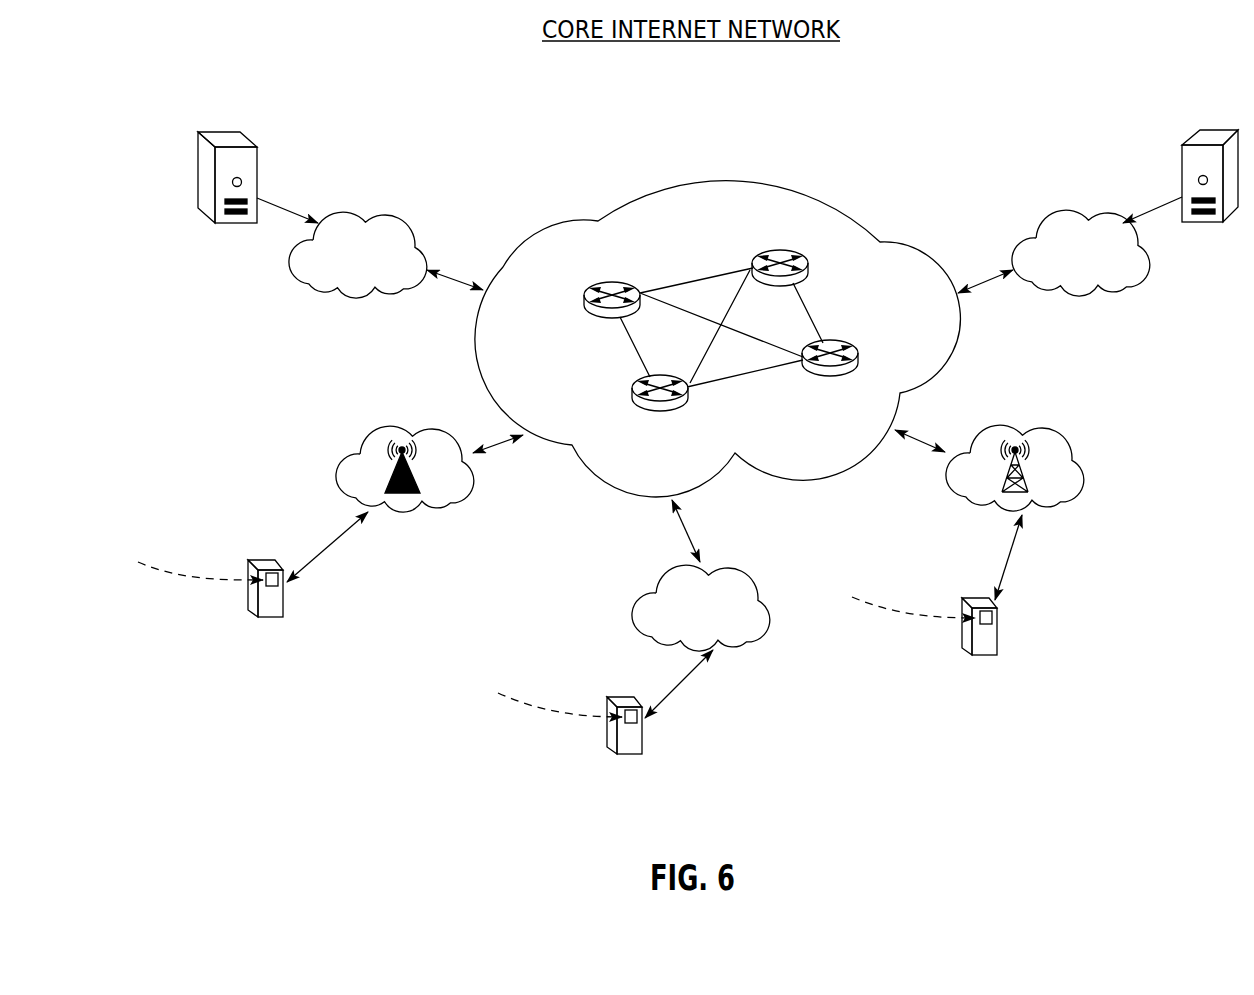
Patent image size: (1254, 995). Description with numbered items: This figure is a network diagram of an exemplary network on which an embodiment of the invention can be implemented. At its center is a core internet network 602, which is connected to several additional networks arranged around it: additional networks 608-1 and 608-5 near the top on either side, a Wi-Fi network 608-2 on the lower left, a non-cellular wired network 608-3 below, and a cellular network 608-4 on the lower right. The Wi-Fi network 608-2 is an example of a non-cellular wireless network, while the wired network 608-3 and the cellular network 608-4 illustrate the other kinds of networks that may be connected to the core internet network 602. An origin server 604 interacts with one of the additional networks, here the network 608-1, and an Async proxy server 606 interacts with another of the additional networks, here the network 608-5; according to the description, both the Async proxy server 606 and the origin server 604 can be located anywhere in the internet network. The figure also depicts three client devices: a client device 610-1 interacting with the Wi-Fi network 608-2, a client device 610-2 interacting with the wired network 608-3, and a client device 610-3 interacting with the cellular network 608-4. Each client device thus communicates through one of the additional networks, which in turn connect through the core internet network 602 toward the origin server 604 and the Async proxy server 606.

The core internet network 602 is at (744, 180).
The origin server 604 is at (235, 223).
The Async proxy server 606 is at (1203, 222).
The additional network 608-1 is at (381, 213).
The Wi-Fi network 608-2 is at (392, 428).
The non-cellular wired network 608-3 is at (744, 570).
The cellular network 608-4 is at (1033, 425).
The additional network 608-5 is at (1062, 212).
The client device 610-1 is at (274, 617).
The client device 610-2 is at (632, 753).
The client device 610-3 is at (987, 655).